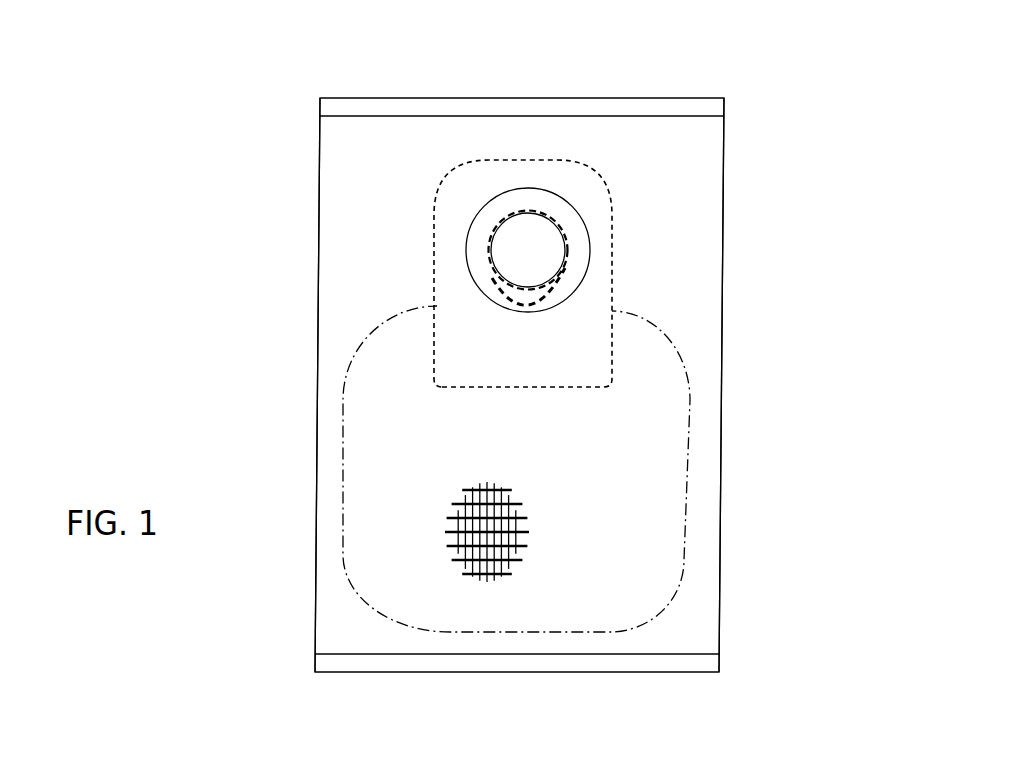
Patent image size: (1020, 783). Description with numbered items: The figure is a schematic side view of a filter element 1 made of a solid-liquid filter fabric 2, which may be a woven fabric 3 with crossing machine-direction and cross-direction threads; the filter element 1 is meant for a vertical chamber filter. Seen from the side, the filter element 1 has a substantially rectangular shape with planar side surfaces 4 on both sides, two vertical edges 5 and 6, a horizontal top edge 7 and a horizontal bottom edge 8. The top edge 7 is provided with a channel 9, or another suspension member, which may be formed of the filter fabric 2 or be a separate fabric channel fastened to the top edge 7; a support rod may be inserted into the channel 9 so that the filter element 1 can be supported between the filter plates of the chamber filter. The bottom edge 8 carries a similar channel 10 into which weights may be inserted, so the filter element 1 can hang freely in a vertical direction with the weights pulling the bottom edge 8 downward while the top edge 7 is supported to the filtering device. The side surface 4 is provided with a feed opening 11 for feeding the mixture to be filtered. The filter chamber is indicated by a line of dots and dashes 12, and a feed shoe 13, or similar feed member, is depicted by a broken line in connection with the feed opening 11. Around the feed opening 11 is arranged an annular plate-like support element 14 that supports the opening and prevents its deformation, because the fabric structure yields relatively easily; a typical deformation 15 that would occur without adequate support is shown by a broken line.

The filter element 1 is at (146, 115).
The solid-liquid filter fabric 2 is at (279, 462).
The woven fabric 3 is at (508, 530).
The planar side surface 4 is at (682, 247).
The vertical edge 5 is at (304, 358).
The vertical edge 6 is at (740, 335).
The top edge 7 is at (542, 72).
The bottom edge 8 is at (552, 694).
The channel 9 is at (416, 106).
The channel 10 is at (418, 660).
The feed opening 11 is at (545, 242).
The line of dots and dashes 12 is at (343, 420).
The feed shoe 13 is at (461, 182).
The annular plate-like support element 14 is at (479, 248).
The deformation 15 is at (502, 293).